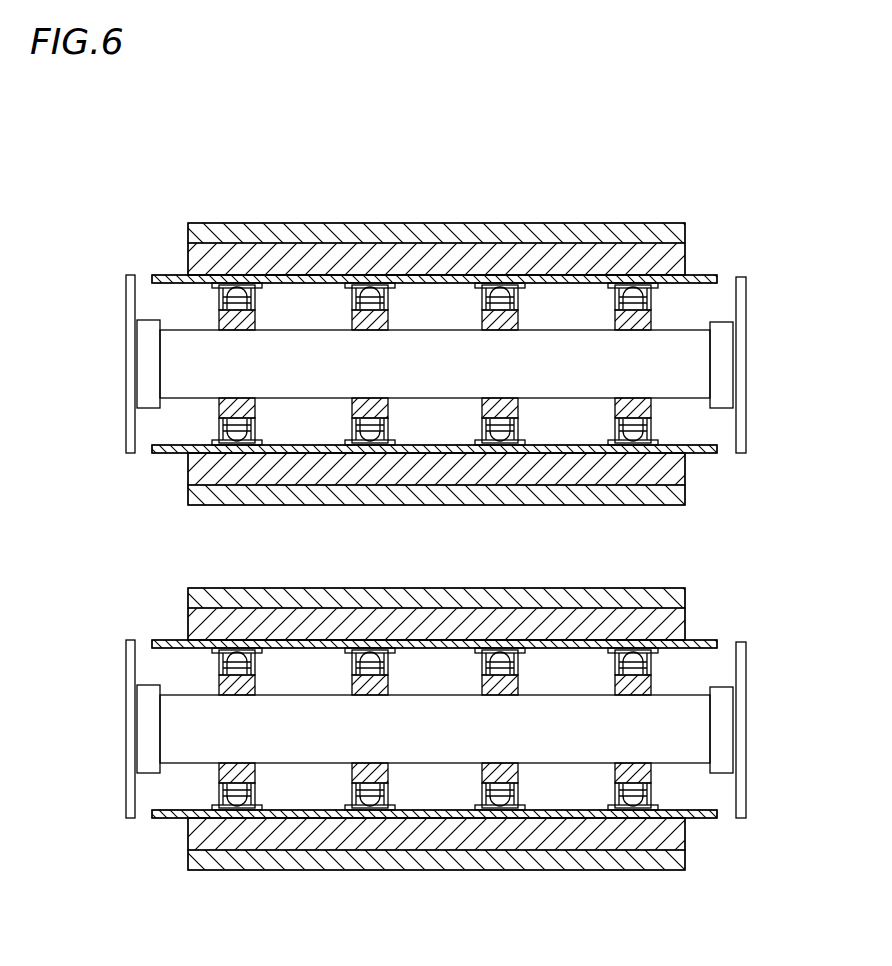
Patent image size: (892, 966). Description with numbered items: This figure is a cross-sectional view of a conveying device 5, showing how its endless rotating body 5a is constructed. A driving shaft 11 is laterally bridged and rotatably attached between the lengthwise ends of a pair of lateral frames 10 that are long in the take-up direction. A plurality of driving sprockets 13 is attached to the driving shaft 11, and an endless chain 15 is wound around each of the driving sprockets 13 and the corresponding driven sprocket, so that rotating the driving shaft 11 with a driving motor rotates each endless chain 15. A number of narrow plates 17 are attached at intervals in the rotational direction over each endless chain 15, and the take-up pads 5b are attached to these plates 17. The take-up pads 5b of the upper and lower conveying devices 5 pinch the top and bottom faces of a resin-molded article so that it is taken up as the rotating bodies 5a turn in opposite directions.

The conveying device 5 is at (706, 262).
The endless rotating body 5a is at (150, 272).
The take-up pad 5b is at (470, 232).
The lateral frame 10 is at (130, 372).
The driving shaft 11 is at (416, 358).
The driving sprocket 13 is at (368, 312).
The endless chain 15 is at (350, 298).
The narrow plate 17 is at (173, 273).